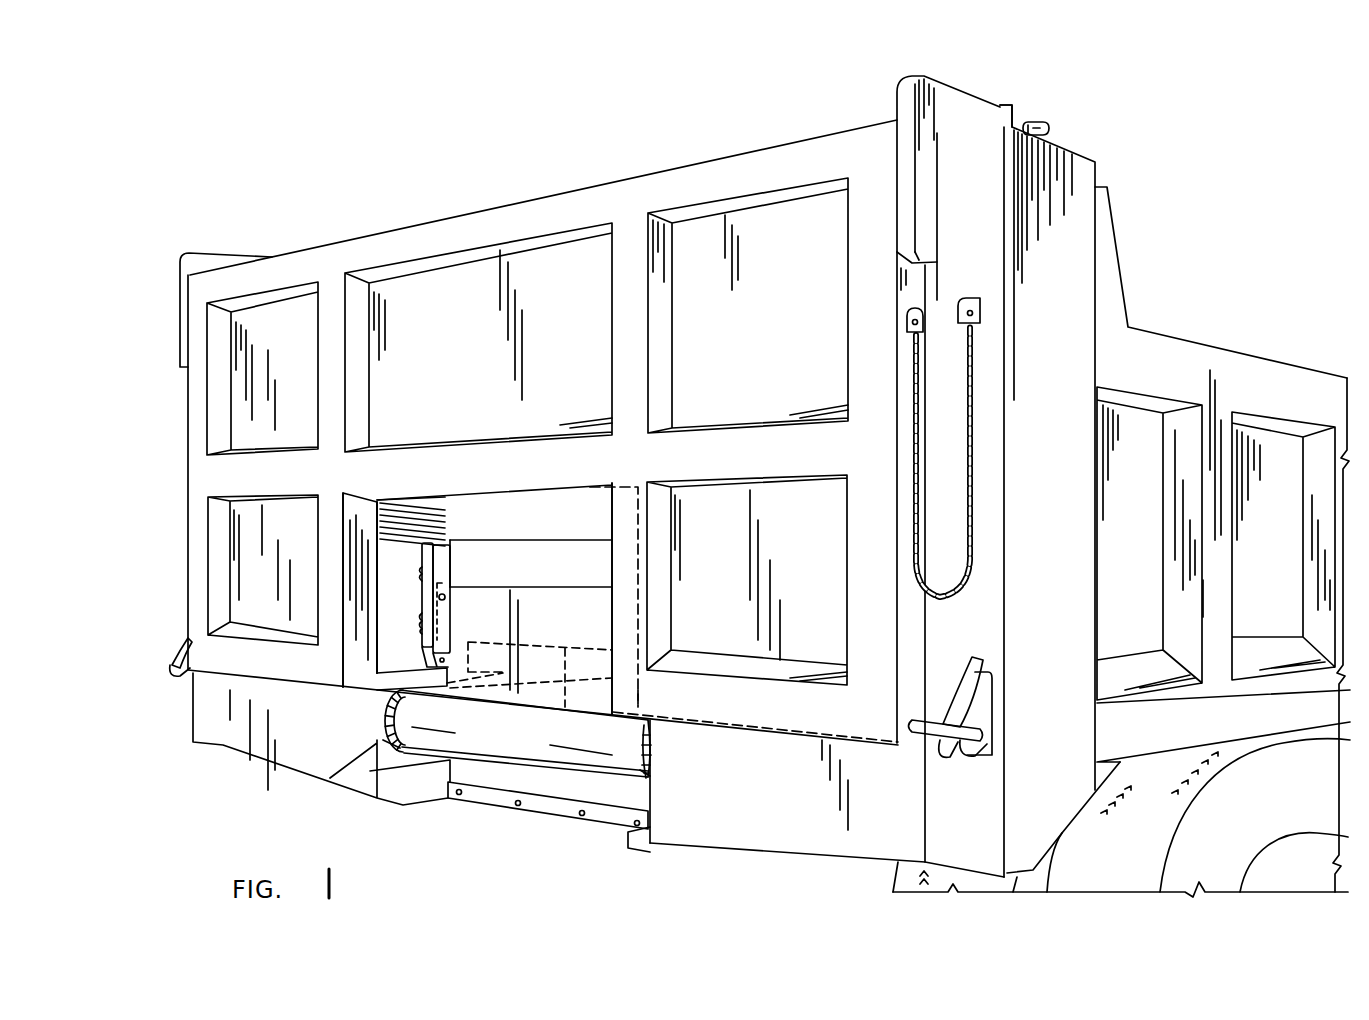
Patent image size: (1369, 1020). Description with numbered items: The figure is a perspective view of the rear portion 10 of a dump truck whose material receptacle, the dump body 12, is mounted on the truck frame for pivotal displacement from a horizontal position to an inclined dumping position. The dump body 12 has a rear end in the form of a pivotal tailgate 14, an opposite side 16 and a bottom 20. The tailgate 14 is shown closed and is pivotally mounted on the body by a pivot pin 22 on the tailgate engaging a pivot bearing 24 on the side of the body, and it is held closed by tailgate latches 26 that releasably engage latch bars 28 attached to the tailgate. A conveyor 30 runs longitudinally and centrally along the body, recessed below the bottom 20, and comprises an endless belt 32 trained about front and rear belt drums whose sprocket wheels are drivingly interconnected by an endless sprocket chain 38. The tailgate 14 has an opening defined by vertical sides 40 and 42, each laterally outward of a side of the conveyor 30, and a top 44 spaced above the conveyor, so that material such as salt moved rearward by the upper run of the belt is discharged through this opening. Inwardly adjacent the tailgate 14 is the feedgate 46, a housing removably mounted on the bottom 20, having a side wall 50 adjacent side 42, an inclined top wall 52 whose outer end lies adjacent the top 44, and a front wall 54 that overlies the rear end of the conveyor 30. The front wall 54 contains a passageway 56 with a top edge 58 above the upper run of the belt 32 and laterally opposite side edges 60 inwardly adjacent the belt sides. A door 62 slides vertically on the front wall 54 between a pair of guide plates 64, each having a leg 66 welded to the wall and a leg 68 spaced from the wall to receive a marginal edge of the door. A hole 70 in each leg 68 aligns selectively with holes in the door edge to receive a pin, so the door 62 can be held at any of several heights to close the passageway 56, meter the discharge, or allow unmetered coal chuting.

The rear portion 10 is at (1258, 170).
The dump body 12 is at (1166, 318).
The tailgate 14 is at (547, 192).
The side 16 is at (1237, 365).
The bottom 20 is at (398, 680).
The pivot pin 22 is at (1050, 128).
The pivot bearing 24 is at (1018, 113).
The tailgate latch 26 is at (960, 668).
The latch bar 28 is at (990, 738).
The conveyor 30 is at (524, 767).
The endless belt 32 is at (585, 755).
The endless sprocket chain 38 is at (383, 740).
The vertical side 40 is at (615, 686).
The top 44 is at (597, 488).
The vertical side 42 is at (353, 648).
The feedgate 46 is at (590, 614).
The side wall 50 is at (385, 620).
The inclined top wall 52 is at (430, 527).
The front wall 54 is at (572, 545).
The passageway 56 is at (538, 652).
The top edge 58 is at (562, 693).
The side edges 60 is at (488, 643).
The door 62 is at (497, 593).
The guide plate 64 is at (449, 543).
The leg 66 is at (420, 553).
The leg 68 is at (437, 575).
The hole 70 is at (439, 596).